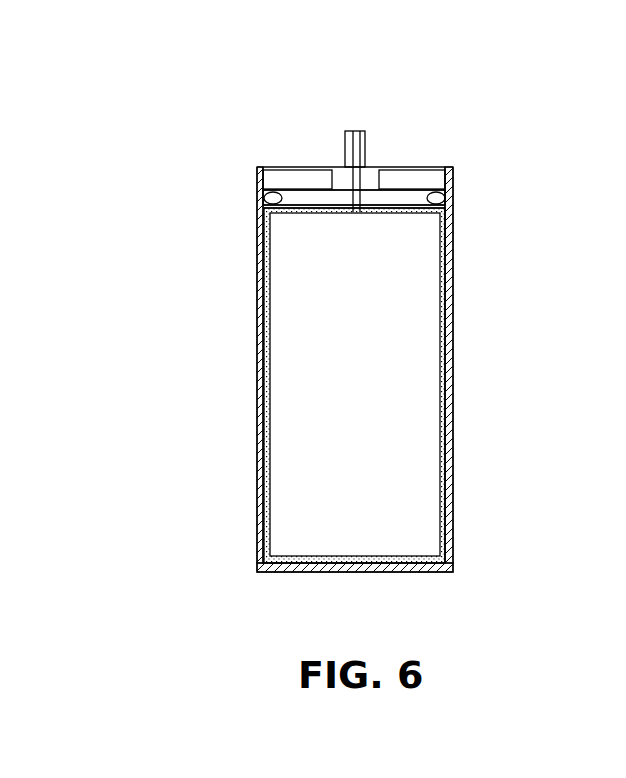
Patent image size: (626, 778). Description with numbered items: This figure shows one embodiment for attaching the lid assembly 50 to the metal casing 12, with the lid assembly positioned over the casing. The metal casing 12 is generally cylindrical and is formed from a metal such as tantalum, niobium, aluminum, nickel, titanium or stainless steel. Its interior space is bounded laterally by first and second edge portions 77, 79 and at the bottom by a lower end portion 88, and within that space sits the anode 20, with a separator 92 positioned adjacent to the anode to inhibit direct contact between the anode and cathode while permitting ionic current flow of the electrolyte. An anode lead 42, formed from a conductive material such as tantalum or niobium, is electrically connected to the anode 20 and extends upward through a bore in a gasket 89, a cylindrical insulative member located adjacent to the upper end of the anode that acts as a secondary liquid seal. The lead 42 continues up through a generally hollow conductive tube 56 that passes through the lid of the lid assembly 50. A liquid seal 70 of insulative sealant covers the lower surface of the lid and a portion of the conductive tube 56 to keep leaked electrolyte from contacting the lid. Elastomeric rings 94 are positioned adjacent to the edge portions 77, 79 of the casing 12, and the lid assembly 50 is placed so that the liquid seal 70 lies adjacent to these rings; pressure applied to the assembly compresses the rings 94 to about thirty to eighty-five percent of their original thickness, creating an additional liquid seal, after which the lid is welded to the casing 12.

The metal casing 12 is at (470, 346).
The anode 20 is at (349, 473).
The anode lead 42 is at (354, 131).
The lid assembly 50 is at (466, 191).
The conductive tube 56 is at (366, 150).
The liquid seal 70 is at (303, 190).
The first edge portion 77 is at (257, 343).
The second edge portion 79 is at (453, 385).
The lower end portion 88 is at (270, 570).
The gasket 89 is at (318, 209).
The separator 92 is at (440, 305).
The elastomeric rings 94 is at (441, 199).